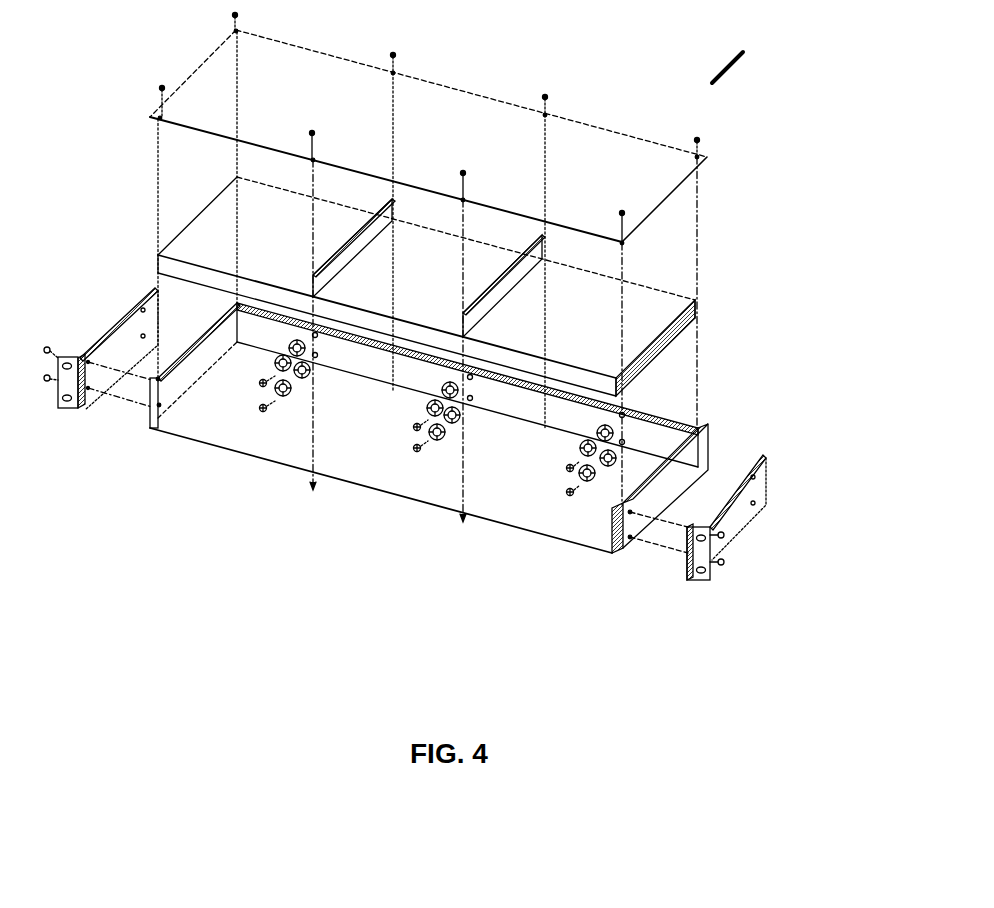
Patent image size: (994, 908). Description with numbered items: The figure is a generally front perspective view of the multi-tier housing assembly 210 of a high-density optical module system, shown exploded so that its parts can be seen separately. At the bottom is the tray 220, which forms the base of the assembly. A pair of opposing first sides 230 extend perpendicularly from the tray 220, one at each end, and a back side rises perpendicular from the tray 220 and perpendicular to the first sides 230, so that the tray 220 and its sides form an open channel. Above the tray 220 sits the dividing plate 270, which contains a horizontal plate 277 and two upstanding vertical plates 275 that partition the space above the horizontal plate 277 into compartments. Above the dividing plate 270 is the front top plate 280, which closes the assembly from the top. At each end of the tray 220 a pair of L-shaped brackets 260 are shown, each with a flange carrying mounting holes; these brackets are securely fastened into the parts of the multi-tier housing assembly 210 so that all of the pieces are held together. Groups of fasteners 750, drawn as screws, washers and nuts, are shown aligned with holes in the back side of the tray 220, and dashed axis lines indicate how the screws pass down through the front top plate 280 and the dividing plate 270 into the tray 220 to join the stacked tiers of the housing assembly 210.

The multi-tier housing assembly 210 is at (741, 46).
The tray 220 is at (540, 513).
The first sides 230 is at (207, 358).
The L-shaped brackets 260 is at (123, 337).
The dividing plate 270 is at (702, 308).
The vertical plates 275 is at (400, 206).
The horizontal plate 277 is at (632, 310).
The front top plate 280 is at (460, 117).
The fasteners 750 is at (413, 405).